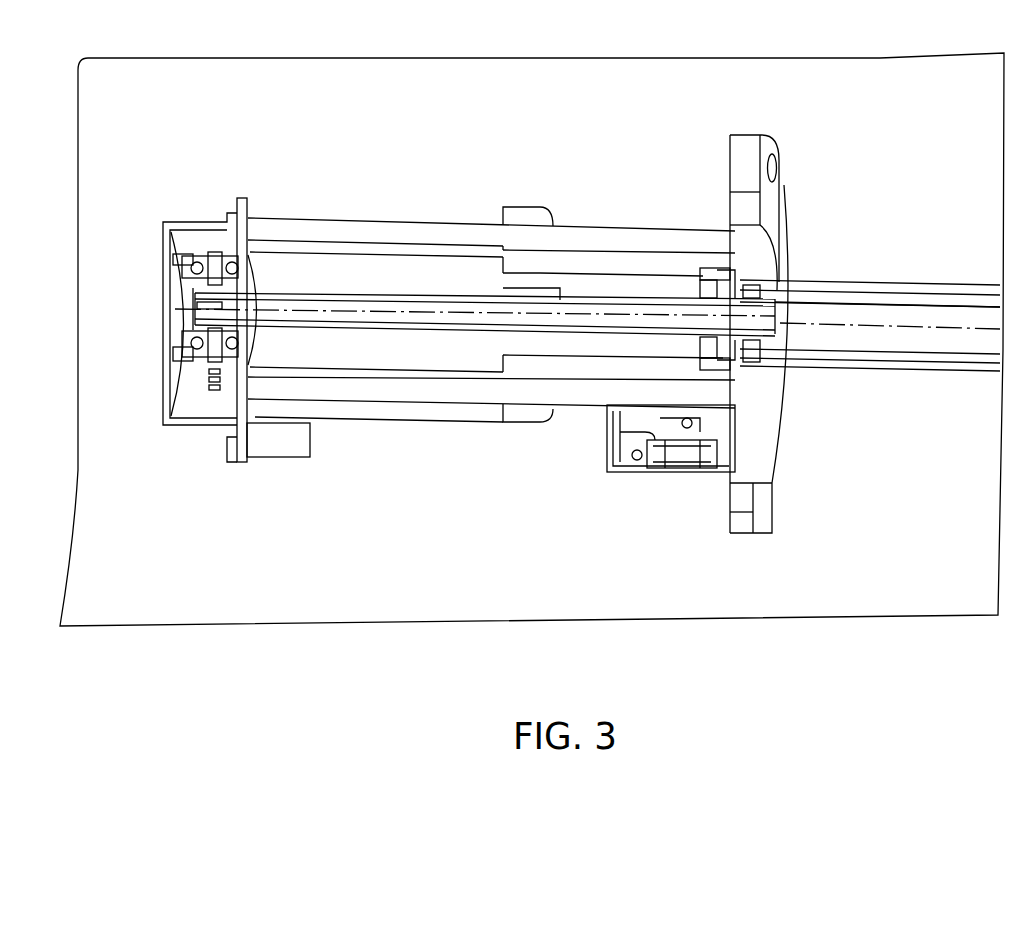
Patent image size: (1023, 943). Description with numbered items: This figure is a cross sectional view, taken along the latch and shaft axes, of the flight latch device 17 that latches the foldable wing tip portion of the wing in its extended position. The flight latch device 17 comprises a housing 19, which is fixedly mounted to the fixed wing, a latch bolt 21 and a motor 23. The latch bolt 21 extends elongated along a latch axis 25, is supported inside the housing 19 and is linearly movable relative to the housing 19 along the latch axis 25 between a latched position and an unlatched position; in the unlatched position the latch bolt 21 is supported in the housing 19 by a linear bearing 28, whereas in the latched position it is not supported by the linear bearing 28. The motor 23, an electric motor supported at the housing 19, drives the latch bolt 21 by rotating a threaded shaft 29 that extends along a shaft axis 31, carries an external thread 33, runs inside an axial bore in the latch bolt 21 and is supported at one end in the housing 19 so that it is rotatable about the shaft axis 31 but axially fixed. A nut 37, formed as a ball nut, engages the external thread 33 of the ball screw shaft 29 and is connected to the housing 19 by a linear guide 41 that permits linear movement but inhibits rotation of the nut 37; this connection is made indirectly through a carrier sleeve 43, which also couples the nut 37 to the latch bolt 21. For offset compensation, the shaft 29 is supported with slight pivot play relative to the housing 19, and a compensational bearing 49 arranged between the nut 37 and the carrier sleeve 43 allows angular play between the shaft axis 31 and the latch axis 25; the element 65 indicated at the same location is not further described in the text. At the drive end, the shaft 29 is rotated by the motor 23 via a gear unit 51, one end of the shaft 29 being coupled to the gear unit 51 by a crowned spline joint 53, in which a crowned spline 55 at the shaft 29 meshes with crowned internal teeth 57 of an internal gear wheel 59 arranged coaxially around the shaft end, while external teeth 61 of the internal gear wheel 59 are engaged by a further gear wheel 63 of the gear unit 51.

The flight latch device 17 is at (133, 112).
The housing 19 is at (395, 233).
The latch bolt 21 is at (968, 293).
The motor 23 is at (277, 438).
The latch axis 25 is at (977, 330).
The linear bearing 28 is at (640, 263).
The threaded shaft 29 is at (345, 303).
The shaft axis 31 is at (448, 312).
The external thread 33 is at (422, 300).
The nut 37 is at (693, 335).
The linear guide 41 is at (582, 298).
The carrier sleeve 43 is at (728, 296).
The compensational bearing 49 is at (709, 262).
The locking ring 65 is at (715, 364).
The gear unit 51 is at (187, 378).
The crowned spline joint 53 is at (218, 225).
The crowned spline 55 is at (202, 296).
The crowned internal teeth 57 is at (203, 330).
The internal gear wheel 59 is at (208, 290).
The external teeth 61 is at (203, 262).
The further gear wheel 63 is at (213, 390).